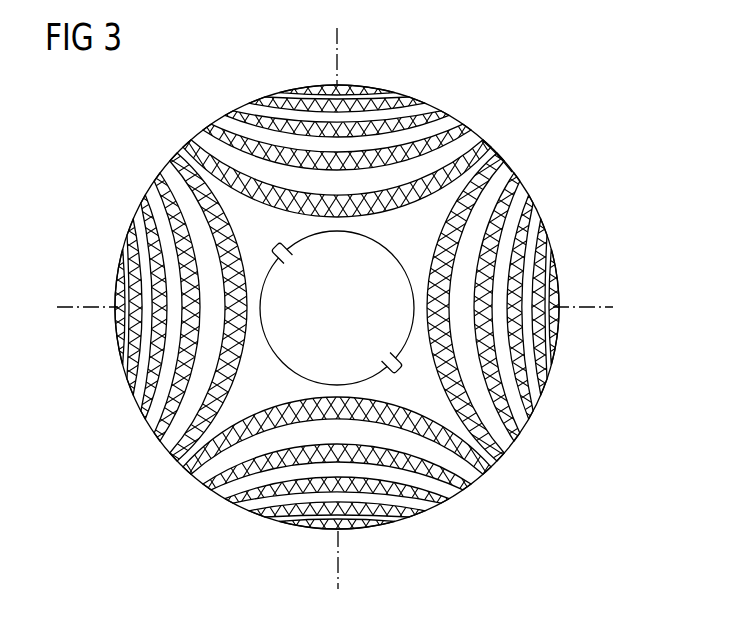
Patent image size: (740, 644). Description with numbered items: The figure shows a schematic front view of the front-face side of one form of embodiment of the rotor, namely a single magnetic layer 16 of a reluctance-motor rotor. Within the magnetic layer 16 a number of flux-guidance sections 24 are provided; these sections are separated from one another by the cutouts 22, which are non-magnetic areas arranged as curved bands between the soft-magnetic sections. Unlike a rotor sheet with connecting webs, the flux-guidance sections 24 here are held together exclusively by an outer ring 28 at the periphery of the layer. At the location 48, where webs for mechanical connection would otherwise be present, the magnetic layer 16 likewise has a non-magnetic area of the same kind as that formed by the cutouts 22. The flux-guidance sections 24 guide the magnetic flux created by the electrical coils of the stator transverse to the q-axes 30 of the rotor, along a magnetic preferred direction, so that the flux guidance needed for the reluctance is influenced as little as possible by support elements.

The magnetic layer 16 is at (580, 76).
The cutouts 22 is at (418, 135).
The flux-guidance sections 24 is at (455, 139).
The outer ring 28 is at (498, 157).
The q-axes 30 is at (343, 46).
The location 48 is at (318, 199).